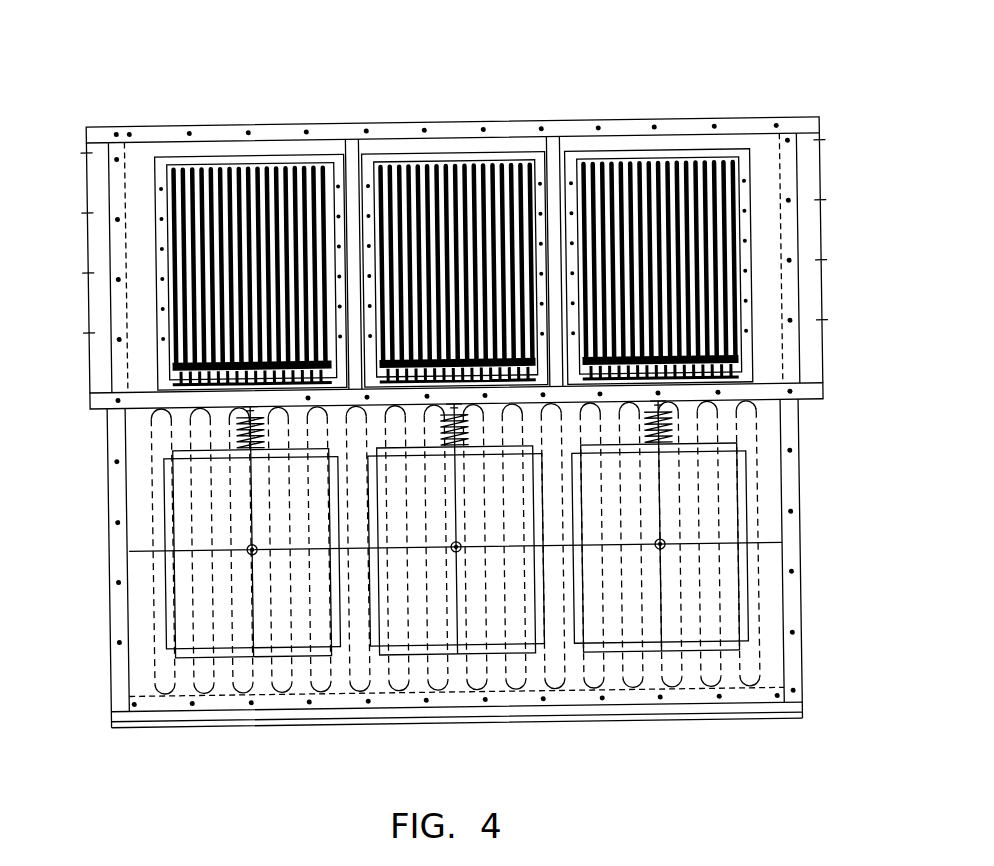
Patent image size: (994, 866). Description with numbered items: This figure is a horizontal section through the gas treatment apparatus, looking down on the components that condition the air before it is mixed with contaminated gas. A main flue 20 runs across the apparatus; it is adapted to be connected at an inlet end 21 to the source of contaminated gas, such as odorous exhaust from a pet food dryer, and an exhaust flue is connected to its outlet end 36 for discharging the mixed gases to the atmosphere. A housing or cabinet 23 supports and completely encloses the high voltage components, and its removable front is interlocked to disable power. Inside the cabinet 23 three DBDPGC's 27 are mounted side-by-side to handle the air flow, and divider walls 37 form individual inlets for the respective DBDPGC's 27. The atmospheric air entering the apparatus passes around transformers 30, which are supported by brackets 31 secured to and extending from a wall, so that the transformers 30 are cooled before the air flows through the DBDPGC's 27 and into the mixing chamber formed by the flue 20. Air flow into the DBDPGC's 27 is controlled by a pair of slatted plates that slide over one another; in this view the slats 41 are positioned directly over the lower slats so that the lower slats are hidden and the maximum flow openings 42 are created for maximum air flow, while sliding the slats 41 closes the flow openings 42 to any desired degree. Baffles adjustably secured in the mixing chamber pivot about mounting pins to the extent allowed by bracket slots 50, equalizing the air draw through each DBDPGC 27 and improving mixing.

The main flue 20 is at (703, 118).
The inlet end 21 is at (828, 223).
The housing or cabinet 23 is at (106, 473).
The DBDPGC 27 is at (600, 158).
The transformer 30 is at (745, 525).
The bracket 31 is at (755, 618).
The outlet end 36 is at (88, 236).
The divider wall 37 is at (345, 138).
The slatted plate 41 is at (623, 665).
The flow opening 42 is at (723, 663).
The bracket slot 50 is at (627, 160).